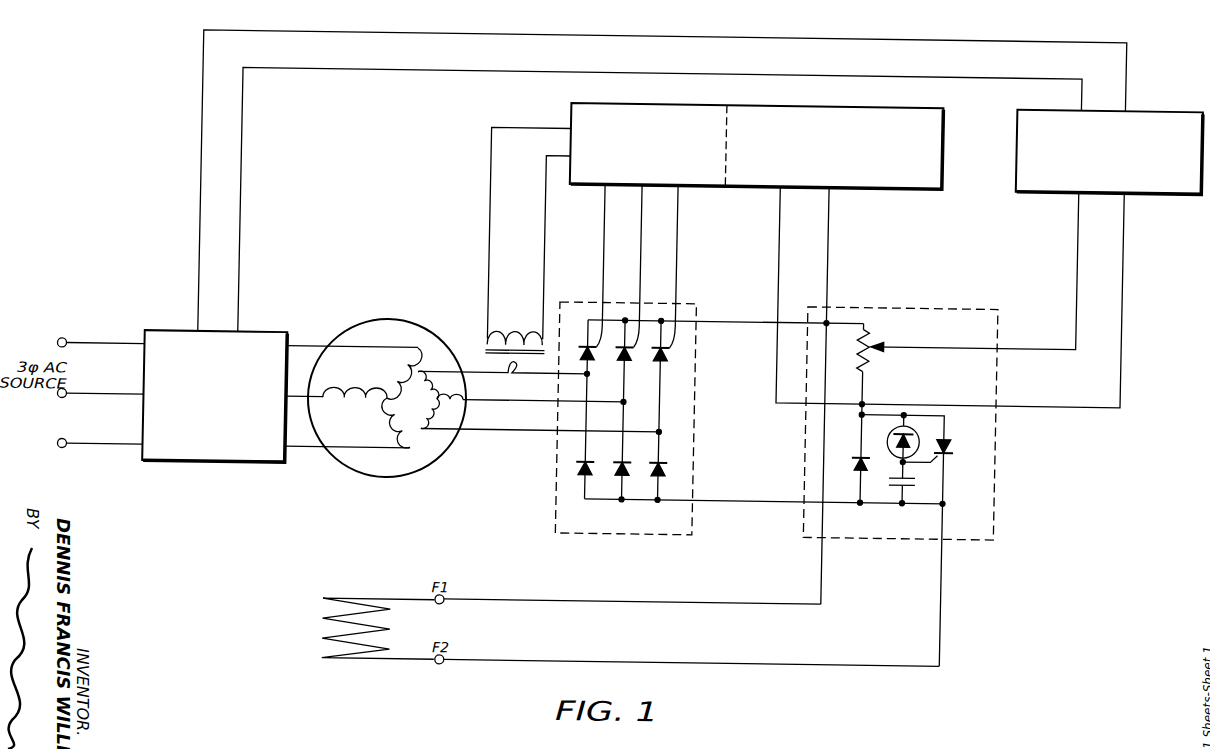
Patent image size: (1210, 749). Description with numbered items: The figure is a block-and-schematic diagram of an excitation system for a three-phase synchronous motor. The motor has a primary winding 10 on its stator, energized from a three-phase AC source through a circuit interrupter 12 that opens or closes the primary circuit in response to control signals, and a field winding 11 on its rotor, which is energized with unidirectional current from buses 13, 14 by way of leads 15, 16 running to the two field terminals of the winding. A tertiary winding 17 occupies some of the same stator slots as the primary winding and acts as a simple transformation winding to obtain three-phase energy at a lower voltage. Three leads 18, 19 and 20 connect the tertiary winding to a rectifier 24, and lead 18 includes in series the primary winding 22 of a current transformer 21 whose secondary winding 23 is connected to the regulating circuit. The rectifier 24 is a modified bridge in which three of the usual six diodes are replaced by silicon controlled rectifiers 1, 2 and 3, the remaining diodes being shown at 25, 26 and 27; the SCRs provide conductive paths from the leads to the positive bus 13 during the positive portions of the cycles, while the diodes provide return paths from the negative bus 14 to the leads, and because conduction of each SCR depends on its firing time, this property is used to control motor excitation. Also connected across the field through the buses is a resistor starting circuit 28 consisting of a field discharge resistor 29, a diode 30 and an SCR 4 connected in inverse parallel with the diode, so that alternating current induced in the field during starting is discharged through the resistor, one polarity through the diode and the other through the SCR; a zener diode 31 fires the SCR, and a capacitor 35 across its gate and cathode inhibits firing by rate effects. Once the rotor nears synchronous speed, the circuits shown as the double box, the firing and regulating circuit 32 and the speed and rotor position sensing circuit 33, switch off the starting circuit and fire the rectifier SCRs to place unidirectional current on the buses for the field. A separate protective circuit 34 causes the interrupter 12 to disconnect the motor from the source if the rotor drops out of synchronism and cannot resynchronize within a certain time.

The silicon controlled rectifier 1 is at (592, 357).
The silicon controlled rectifier 2 is at (629, 357).
The silicon controlled rectifier 3 is at (665, 357).
The SCR 4 is at (954, 445).
The primary winding 10 is at (352, 394).
The field winding 11 is at (328, 622).
The circuit interrupter 12 is at (259, 342).
The bus 13 is at (789, 317).
The bus 14 is at (784, 500).
The lead 15 is at (658, 601).
The lead 16 is at (686, 659).
The tertiary winding 17 is at (464, 409).
The lead 18 is at (548, 373).
The lead 19 is at (552, 404).
The lead 20 is at (554, 434).
The current transformer 21 is at (486, 352).
The primary winding 22 is at (512, 369).
The secondary winding 23 is at (509, 336).
The rectifier 24 is at (582, 302).
The diode 25 is at (582, 476).
The diode 26 is at (620, 468).
The diode 27 is at (664, 457).
The resistor starting circuit 28 is at (966, 302).
The field discharge resistor 29 is at (862, 336).
The diode 30 is at (856, 450).
The zener diode 31 is at (894, 453).
The firing and regulating circuit 32 is at (568, 108).
The speed and rotor position sensing circuit 33 is at (857, 106).
The protective circuit 34 is at (1151, 110).
The capacitor 35 is at (920, 472).